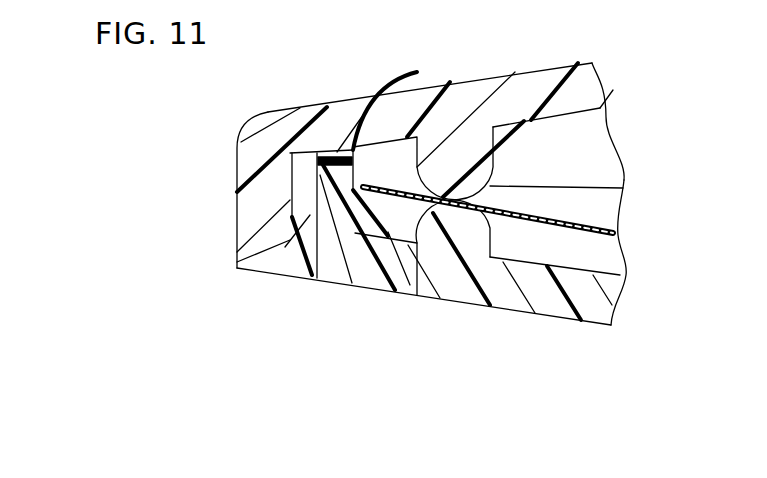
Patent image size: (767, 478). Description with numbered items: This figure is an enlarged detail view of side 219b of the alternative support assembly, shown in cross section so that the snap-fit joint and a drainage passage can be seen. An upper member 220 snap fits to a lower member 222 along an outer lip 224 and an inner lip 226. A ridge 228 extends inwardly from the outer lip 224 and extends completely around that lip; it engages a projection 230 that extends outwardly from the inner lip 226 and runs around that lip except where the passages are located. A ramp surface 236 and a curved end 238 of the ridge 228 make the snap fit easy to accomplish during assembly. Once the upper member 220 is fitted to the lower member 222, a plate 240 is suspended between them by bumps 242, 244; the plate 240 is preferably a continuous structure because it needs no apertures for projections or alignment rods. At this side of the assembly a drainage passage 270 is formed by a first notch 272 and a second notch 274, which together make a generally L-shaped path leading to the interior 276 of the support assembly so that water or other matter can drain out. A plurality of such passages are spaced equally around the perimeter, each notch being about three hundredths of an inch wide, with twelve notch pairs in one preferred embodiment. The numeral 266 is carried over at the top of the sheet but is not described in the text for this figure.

The side 219b is at (242, 357).
The upper member 220 is at (597, 80).
The lower member 222 is at (613, 307).
The outer lip 224 is at (237, 213).
The inner lip 226 is at (421, 295).
The ridge 228 is at (308, 276).
The projection 230 is at (303, 185).
The ramp surface 236 is at (303, 197).
The curved end 238 is at (305, 275).
The plate 240 is at (598, 228).
The bump 242 is at (513, 217).
The bump 244 is at (492, 158).
The connector 266 is at (400, 0).
The drainage passage 270 is at (337, 150).
The first notch 272 is at (240, 260).
The second notch 274 is at (405, 82).
The interior 276 is at (560, 250).